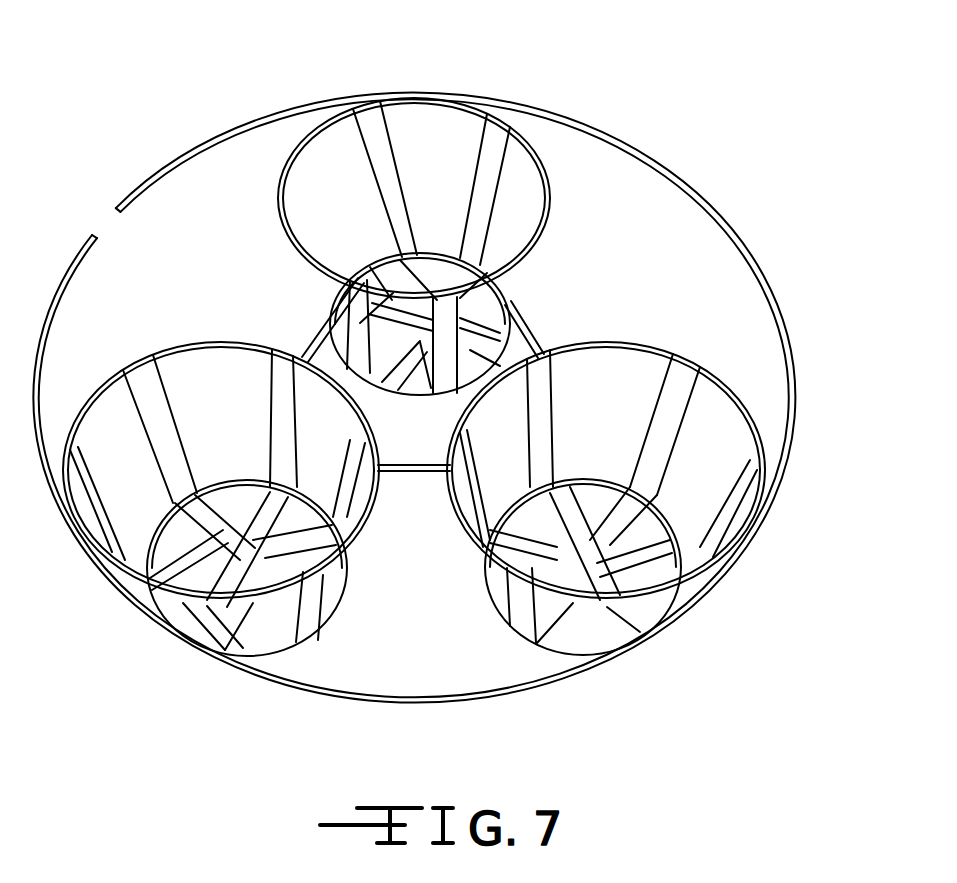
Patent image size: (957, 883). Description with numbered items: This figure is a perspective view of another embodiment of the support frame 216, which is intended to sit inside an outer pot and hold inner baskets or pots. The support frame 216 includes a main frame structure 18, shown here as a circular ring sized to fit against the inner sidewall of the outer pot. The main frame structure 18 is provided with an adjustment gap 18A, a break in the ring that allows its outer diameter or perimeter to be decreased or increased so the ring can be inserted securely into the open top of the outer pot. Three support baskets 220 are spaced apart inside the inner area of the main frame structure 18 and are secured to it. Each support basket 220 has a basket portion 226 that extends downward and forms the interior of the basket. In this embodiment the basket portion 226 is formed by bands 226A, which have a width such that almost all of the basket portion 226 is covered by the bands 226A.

The support frame 216 is at (461, 341).
The main frame structure 18 is at (575, 677).
The adjustment gap 18A is at (101, 224).
The support basket 220 is at (653, 472).
The basket portion 226 is at (687, 427).
The bands 226A is at (545, 411).